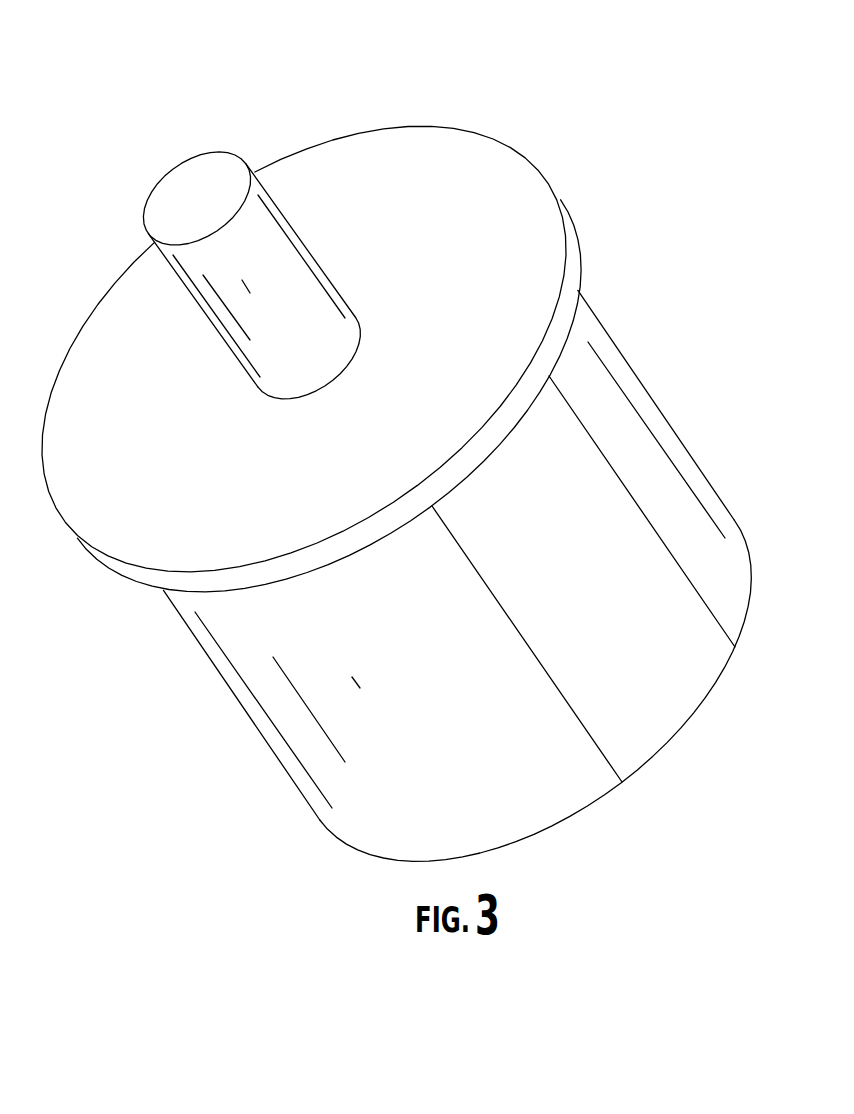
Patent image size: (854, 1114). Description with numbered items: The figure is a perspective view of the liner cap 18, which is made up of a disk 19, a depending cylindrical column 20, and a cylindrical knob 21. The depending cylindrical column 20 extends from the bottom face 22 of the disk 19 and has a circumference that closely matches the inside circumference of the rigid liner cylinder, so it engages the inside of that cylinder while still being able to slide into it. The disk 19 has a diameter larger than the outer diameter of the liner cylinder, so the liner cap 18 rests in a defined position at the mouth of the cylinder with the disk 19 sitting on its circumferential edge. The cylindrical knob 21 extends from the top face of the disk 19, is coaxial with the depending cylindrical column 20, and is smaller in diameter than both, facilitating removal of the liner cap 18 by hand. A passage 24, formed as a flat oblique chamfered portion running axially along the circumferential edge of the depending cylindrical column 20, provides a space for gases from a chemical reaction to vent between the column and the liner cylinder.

The liner cap 18 is at (532, 114).
The disk 19 is at (437, 271).
The depending cylindrical column 20 is at (612, 397).
The cylindrical knob 21 is at (188, 188).
The bottom face 22 is at (583, 260).
The passage 24 is at (595, 588).